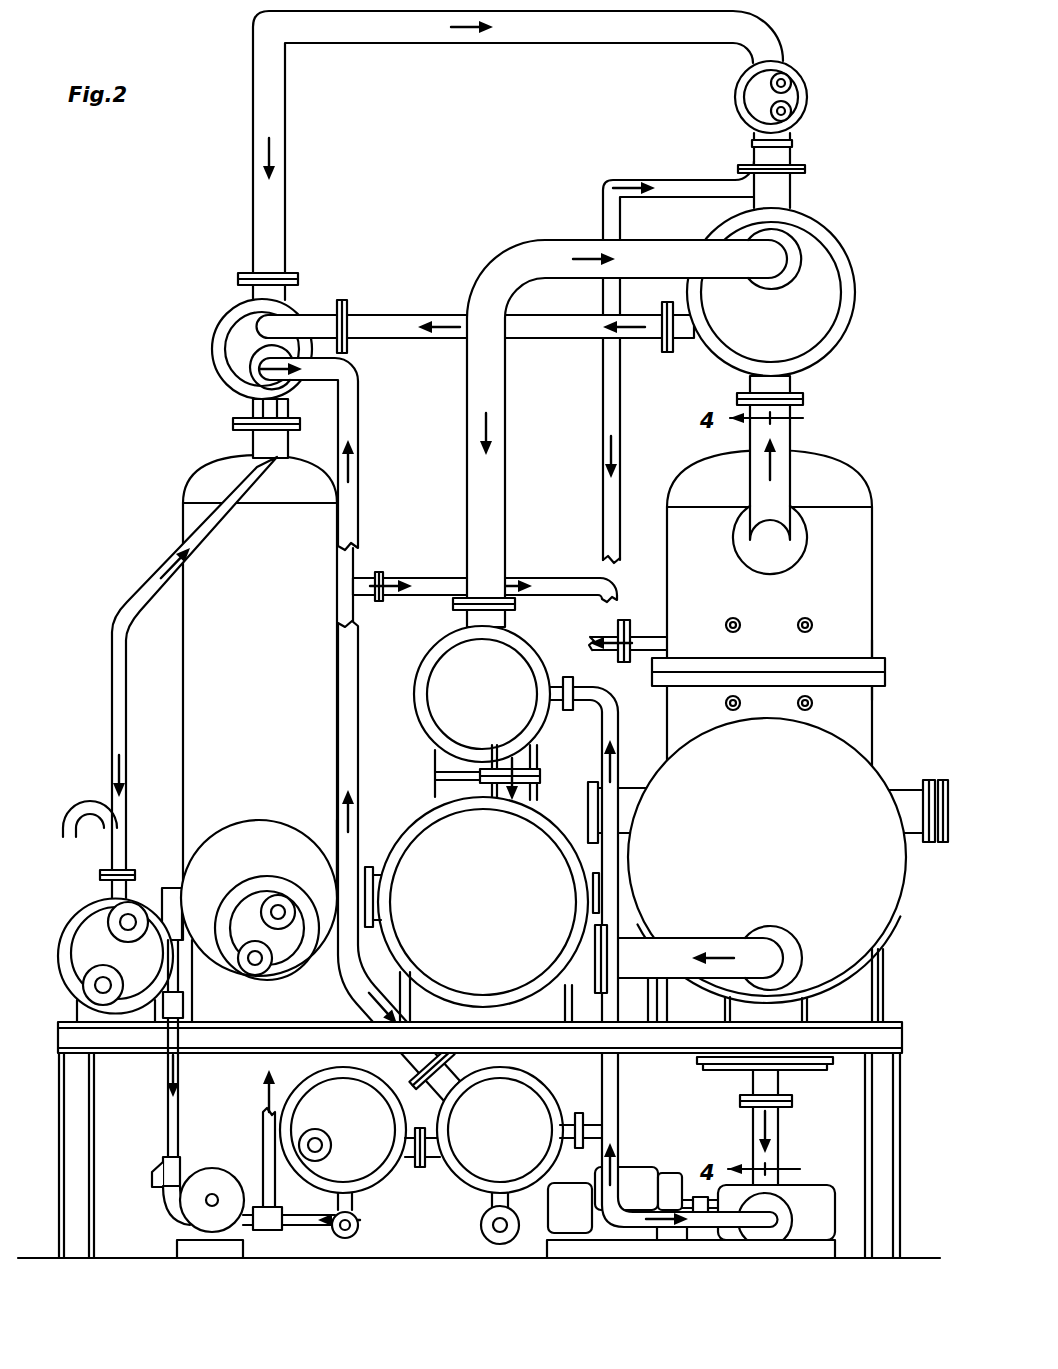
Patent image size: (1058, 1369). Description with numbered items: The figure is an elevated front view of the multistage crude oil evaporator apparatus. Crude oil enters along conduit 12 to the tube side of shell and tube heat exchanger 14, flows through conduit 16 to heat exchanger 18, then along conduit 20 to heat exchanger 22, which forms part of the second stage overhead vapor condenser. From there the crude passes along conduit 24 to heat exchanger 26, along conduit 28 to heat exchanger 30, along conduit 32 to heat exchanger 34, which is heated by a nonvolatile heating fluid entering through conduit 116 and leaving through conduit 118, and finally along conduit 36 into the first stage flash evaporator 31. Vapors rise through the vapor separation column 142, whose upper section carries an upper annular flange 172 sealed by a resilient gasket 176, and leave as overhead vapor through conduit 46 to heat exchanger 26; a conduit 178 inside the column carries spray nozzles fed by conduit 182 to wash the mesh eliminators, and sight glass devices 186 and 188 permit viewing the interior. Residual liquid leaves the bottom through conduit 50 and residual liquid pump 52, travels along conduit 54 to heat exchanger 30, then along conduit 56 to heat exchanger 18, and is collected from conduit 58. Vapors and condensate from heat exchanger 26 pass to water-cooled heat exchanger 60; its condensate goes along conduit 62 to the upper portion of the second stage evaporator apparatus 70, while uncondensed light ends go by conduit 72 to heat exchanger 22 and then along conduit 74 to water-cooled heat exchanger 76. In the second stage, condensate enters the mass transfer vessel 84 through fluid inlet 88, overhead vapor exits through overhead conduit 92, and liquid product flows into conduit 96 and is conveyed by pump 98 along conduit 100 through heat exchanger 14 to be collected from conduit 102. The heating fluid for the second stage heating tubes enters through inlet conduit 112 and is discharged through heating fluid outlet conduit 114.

The conduit 12 is at (307, 1153).
The shell and tube heat exchanger 14 is at (392, 1180).
The conduit 16 is at (405, 1160).
The shell and tube heat exchanger 18 is at (483, 1194).
The conduit 20 is at (362, 662).
The shell and tube heat exchanger 22 is at (216, 361).
The conduit 24 is at (440, 314).
The shell and tube heat exchanger 26 is at (853, 316).
The conduit 28 is at (512, 455).
The shell and tube heat exchanger 30 is at (419, 716).
The first stage flash evaporator 31 is at (880, 772).
The conduit 32 is at (530, 758).
The shell and tube heat exchanger 34 is at (420, 816).
The conduit 36 is at (668, 978).
The conduit 46 is at (790, 430).
The conduit 50 is at (786, 1130).
The residual liquid pump 52 is at (756, 1246).
The conduit 54 is at (622, 745).
The conduit 56 is at (594, 1118).
The conduit 58 is at (790, 200).
The water-cooled heat exchanger 60 is at (808, 100).
The conduit 62 is at (644, 184).
The second stage evaporator apparatus 70 is at (200, 852).
The conduit 72 is at (443, 32).
The conduit 74 is at (146, 590).
The water-cooled heat exchanger 76 is at (78, 908).
The mass transfer vessel 84 is at (181, 675).
The fluid inlet 88 is at (366, 578).
The overhead conduit 92 is at (252, 435).
The conduit 96 is at (166, 1112).
The pump 98 is at (200, 1175).
The conduit 100 is at (296, 1236).
The conduit 102 is at (342, 1240).
The inlet conduit 112 is at (252, 975).
The heating fluid outlet conduit 114 is at (274, 896).
The conduit 116 is at (600, 864).
The conduit 118 is at (369, 866).
The vapor separation column 142 is at (872, 488).
The upper annular flange 172 is at (876, 658).
The resilient gasket 176 is at (886, 666).
The conduit 178 is at (886, 686).
The conduit 182 is at (598, 634).
The sight glass device 186 is at (588, 797).
The sight glass device 188 is at (942, 842).